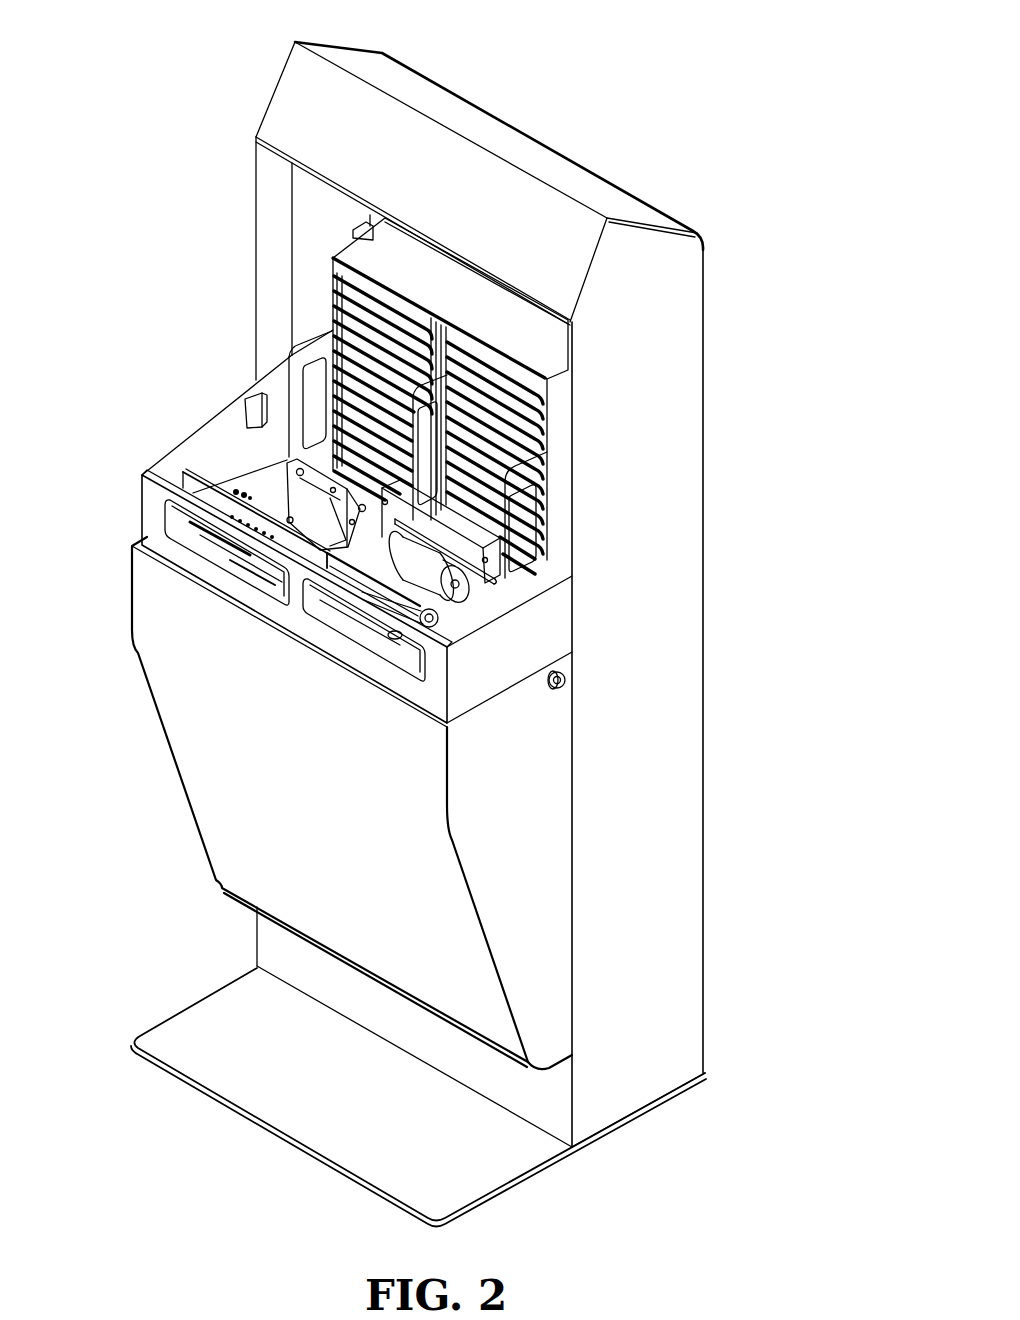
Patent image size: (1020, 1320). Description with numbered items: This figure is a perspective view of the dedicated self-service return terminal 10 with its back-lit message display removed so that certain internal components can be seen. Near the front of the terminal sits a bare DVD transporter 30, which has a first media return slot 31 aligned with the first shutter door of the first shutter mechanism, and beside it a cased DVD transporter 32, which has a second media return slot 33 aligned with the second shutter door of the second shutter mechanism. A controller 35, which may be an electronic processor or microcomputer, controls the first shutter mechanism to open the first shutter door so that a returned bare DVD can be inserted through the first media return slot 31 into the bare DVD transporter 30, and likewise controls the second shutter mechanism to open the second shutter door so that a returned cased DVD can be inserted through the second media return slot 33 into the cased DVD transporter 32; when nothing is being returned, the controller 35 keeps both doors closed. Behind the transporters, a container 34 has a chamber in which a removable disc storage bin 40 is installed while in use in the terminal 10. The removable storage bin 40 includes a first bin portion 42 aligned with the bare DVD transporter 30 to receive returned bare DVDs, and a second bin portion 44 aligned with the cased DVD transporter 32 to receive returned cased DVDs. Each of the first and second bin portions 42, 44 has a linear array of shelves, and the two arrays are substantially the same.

The dedicated self-service return terminal 10 is at (160, 72).
The bare DVD transporter 30 is at (284, 508).
The first media return slot 31 is at (217, 528).
The cased DVD transporter 32 is at (468, 606).
The second media return slot 33 is at (402, 643).
The container 34 is at (522, 350).
The controller 35 is at (253, 395).
The removable disc storage bin 40 is at (395, 348).
The first bin portion 42 is at (362, 352).
The second bin portion 44 is at (515, 462).